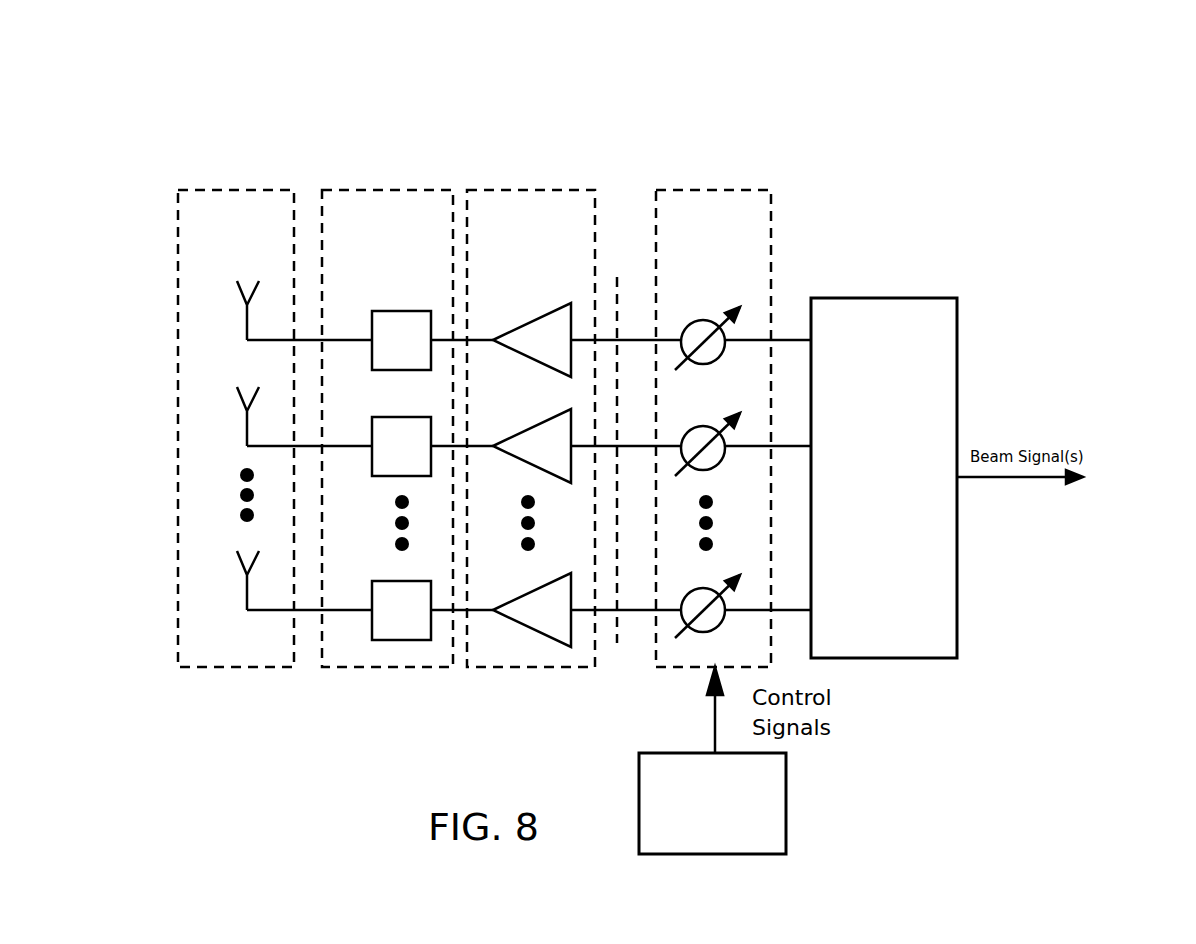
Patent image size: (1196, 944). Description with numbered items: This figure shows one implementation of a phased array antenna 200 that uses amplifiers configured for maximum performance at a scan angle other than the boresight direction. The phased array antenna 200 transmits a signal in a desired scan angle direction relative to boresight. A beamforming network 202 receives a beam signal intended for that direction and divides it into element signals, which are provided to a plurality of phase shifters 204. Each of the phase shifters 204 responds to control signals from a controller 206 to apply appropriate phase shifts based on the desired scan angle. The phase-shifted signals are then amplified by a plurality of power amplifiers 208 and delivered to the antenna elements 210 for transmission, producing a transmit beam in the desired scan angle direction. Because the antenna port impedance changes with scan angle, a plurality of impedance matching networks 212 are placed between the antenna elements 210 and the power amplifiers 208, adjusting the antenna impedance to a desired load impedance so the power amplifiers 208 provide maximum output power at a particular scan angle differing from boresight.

The phased array antenna 200 is at (1037, 105).
The beamforming network 202 is at (847, 298).
The phase shifters 204 is at (715, 190).
The controller 206 is at (786, 807).
The power amplifiers 208 is at (532, 190).
The antenna elements 210 is at (237, 190).
The impedance matching networks 212 is at (387, 190).